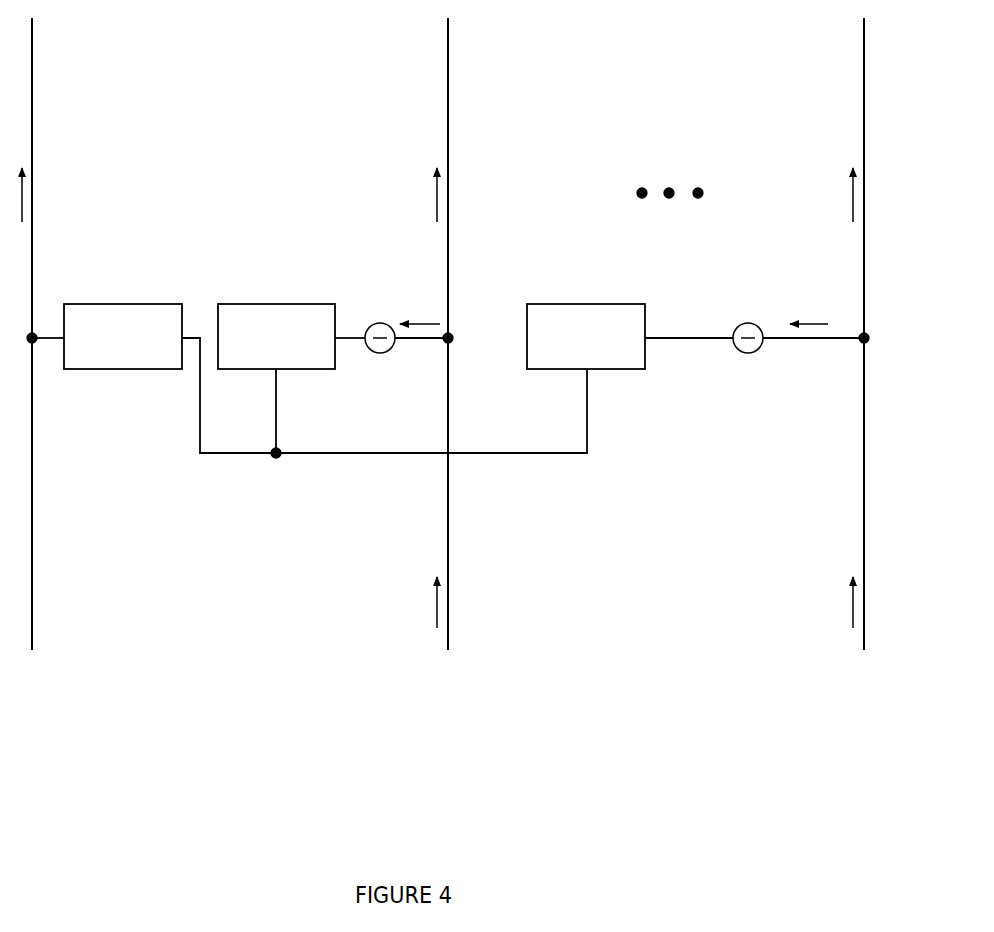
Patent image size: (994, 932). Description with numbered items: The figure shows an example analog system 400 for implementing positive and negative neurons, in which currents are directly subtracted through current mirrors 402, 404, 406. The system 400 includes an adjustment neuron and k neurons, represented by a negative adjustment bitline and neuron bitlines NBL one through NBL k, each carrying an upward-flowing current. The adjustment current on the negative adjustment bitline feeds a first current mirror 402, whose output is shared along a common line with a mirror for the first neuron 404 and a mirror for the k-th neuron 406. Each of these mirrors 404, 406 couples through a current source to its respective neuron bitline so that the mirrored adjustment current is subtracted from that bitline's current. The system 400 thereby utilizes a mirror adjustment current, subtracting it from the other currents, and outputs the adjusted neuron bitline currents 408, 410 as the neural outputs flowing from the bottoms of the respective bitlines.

The system 400 is at (478, 424).
The current mirror 402 is at (123, 353).
The current mirror 404 is at (276, 321).
The current mirror 406 is at (586, 320).
The adjusted neuron bitline current 408 is at (451, 674).
The adjusted neuron bitline current 410 is at (867, 674).